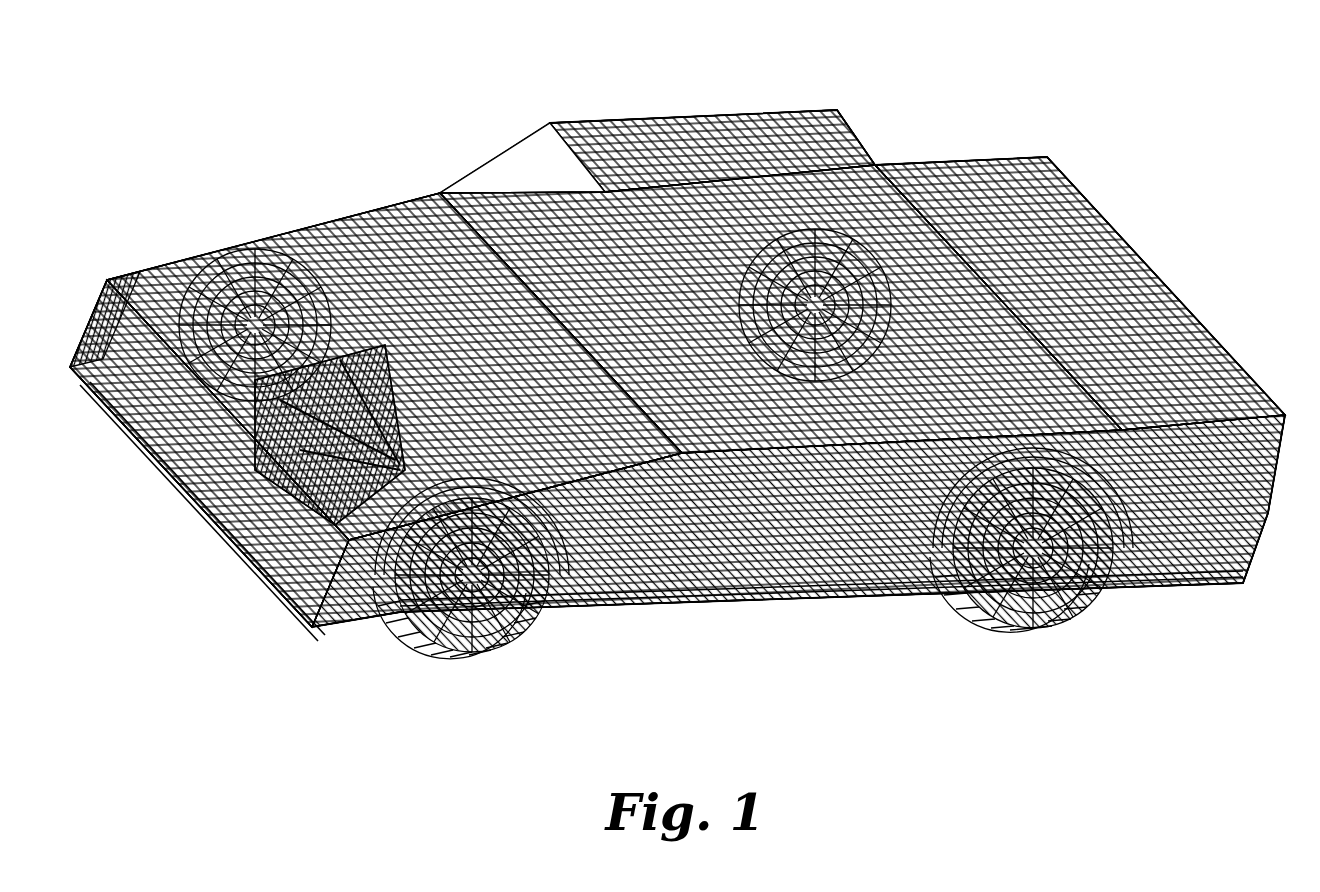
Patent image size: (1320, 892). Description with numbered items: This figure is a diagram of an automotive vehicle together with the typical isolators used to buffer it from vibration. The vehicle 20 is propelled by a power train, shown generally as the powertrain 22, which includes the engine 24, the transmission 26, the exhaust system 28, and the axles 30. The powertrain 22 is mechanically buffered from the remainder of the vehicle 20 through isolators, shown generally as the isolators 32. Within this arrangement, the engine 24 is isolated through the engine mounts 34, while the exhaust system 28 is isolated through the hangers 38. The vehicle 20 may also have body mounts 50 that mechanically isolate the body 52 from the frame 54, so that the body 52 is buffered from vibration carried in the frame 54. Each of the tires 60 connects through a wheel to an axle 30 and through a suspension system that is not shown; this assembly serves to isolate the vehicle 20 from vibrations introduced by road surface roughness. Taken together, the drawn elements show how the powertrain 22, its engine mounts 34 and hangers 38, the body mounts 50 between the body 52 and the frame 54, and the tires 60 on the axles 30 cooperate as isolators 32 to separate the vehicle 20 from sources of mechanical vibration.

The vehicle 20 is at (1228, 320).
The powertrain 22 is at (208, 562).
The engine 24 is at (282, 335).
The transmission 26 is at (383, 530).
The exhaust system 28 is at (700, 603).
The axles 30 is at (137, 278).
The isolators 32 is at (360, 400).
The engine mounts 34 is at (275, 585).
The hangers 38 is at (618, 602).
The body mounts 50 is at (928, 588).
The body 52 is at (950, 185).
The frame 54 is at (820, 603).
The tires 60 is at (992, 622).